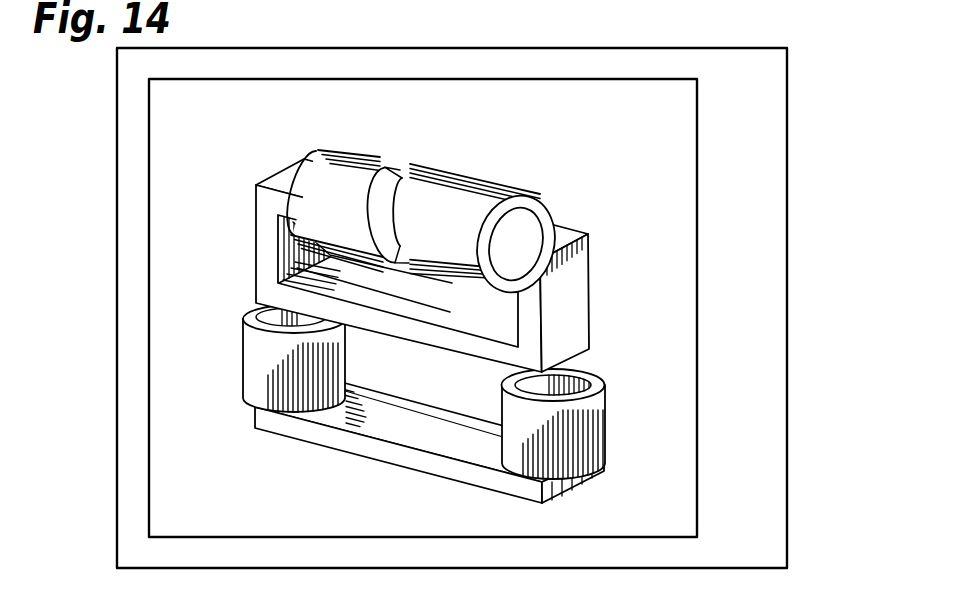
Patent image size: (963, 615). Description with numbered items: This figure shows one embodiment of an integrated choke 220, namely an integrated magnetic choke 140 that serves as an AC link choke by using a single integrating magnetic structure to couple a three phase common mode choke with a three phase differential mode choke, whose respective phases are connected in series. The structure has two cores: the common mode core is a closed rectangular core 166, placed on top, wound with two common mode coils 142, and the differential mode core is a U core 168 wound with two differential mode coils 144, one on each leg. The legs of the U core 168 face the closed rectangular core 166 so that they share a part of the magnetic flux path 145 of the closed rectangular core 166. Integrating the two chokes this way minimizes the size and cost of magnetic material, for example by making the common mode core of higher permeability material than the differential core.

The integrated magnetic choke 140 is at (680, 170).
The integrated choke 220 is at (762, 240).
The common mode coil 142 is at (473, 218).
The differential mode coil 144 is at (605, 402).
The magnetic flux path 145 is at (412, 332).
The closed rectangular core 166 is at (577, 302).
The U core 168 is at (526, 496).